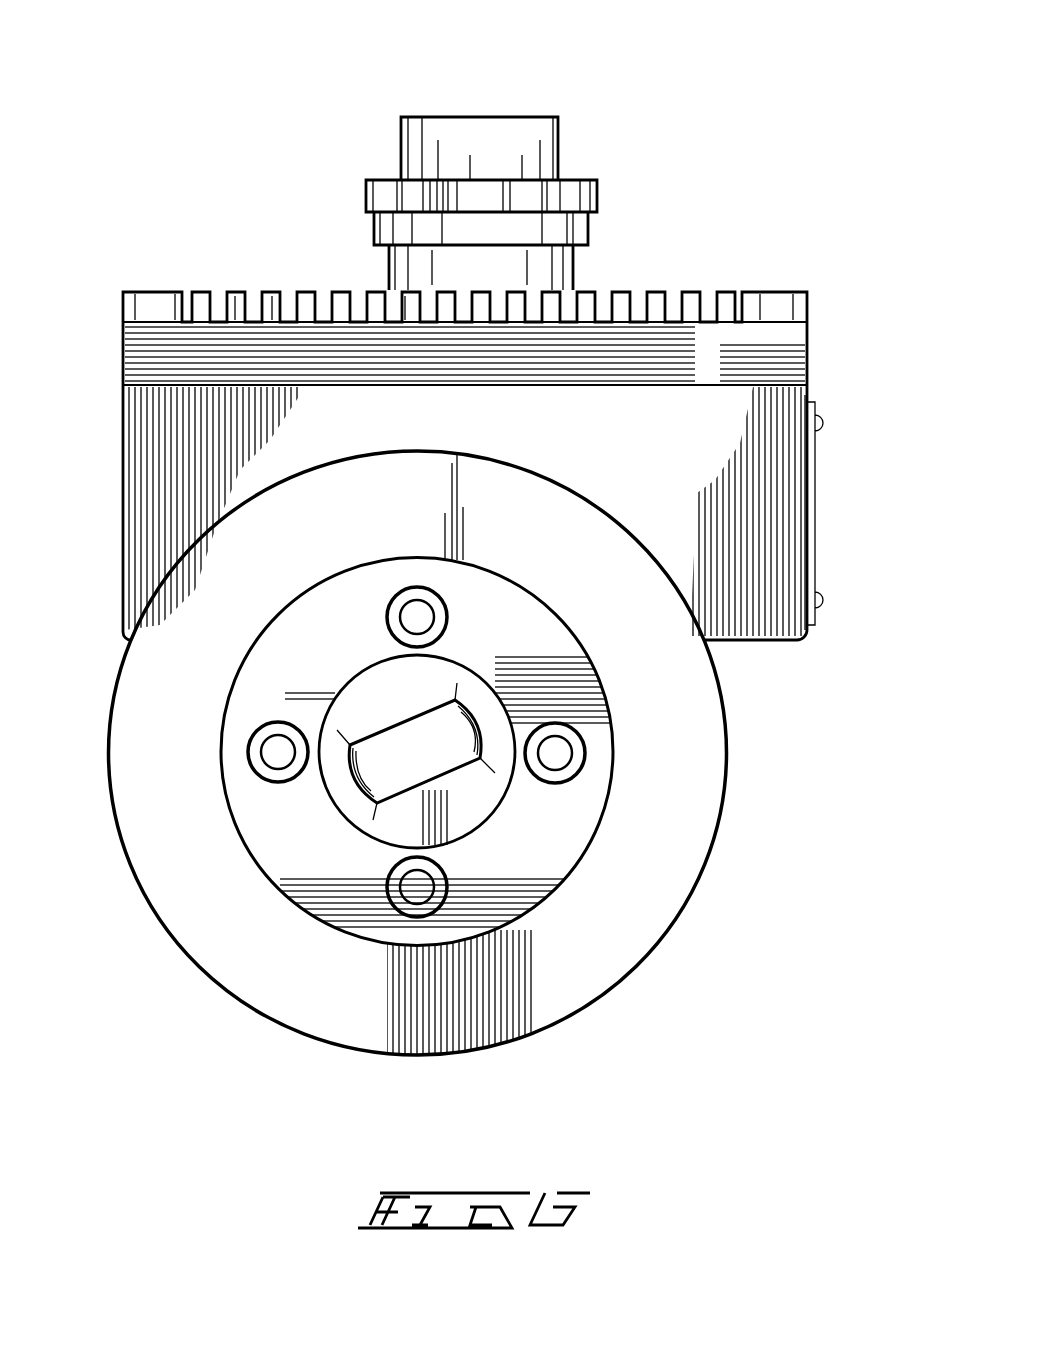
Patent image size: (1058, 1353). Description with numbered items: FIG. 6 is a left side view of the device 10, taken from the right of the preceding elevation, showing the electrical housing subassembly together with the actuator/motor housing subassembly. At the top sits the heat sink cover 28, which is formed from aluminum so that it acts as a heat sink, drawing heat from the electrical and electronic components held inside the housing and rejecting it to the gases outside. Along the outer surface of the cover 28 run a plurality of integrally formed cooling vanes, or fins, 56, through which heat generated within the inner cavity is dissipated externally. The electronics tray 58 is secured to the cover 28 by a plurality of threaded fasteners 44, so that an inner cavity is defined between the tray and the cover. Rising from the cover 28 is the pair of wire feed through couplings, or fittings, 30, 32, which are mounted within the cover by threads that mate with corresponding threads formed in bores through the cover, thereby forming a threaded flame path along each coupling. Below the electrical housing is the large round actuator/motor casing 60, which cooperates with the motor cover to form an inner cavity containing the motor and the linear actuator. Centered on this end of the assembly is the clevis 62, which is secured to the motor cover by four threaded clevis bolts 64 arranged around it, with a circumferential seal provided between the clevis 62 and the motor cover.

The sensor assembly 10 is at (757, 50).
The heat sink cover 28 is at (807, 363).
The wire feed through coupling 30 is at (503, 117).
The wire feed through coupling 32 is at (481, 203).
The threaded fasteners 44 is at (162, 298).
The cooling vanes 56 is at (305, 290).
The electronics tray 58 is at (662, 462).
The actuator/motor casing 60 is at (390, 521).
The clevis 62 is at (440, 764).
The clevis bolts 64 is at (282, 722).